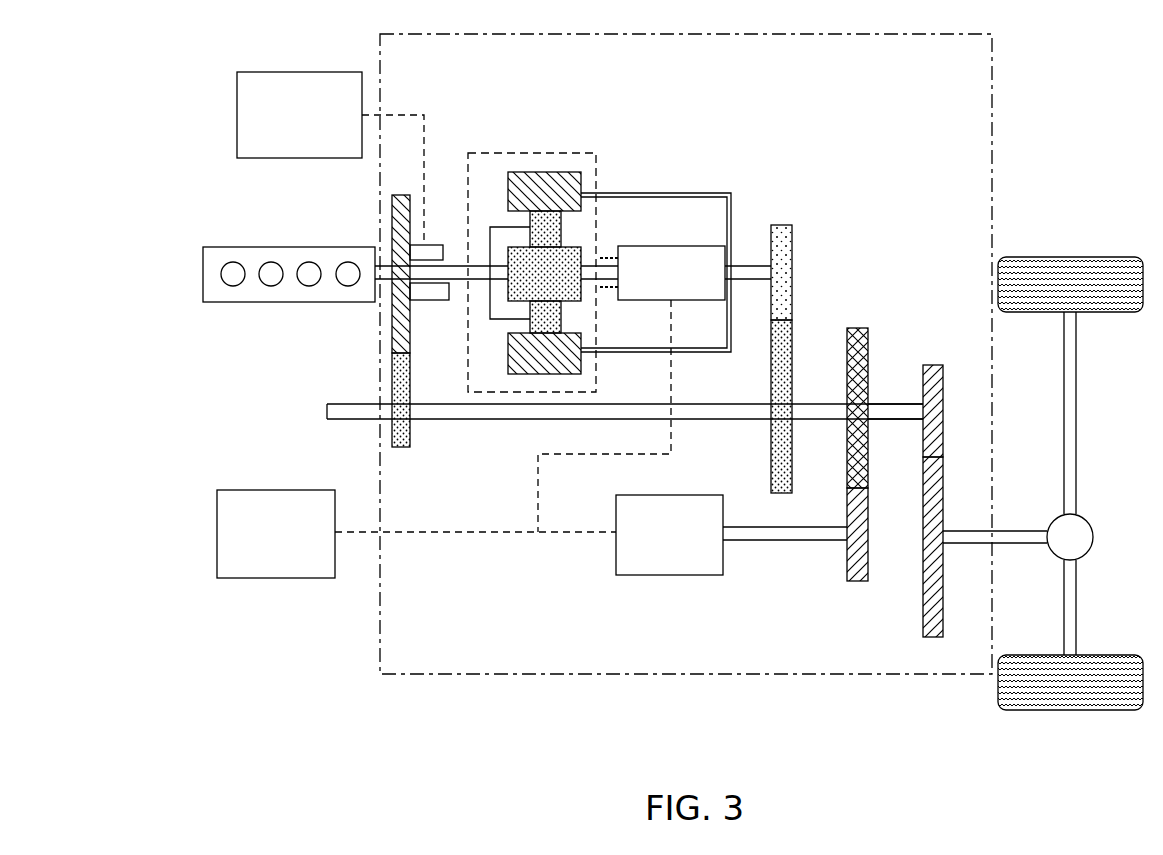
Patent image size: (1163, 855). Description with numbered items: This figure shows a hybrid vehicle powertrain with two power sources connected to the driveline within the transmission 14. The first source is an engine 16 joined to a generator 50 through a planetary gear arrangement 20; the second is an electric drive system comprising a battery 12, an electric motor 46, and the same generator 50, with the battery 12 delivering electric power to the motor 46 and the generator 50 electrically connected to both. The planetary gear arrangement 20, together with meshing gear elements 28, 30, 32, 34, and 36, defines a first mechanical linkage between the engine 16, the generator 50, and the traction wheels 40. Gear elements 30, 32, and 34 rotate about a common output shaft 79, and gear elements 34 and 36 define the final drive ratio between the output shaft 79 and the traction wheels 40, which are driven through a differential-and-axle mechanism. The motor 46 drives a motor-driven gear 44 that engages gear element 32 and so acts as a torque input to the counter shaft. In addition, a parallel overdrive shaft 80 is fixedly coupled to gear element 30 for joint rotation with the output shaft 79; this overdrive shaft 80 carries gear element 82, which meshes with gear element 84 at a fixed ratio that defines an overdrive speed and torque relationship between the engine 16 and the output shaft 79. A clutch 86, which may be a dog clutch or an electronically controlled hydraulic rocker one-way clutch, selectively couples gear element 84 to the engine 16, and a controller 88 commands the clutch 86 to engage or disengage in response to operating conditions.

The battery 12 is at (290, 578).
The transmission 14 is at (782, 675).
The engine 16 is at (290, 302).
The planetary gear arrangement 20 is at (530, 153).
The meshing gear element 28 is at (792, 250).
The meshing gear element 30 is at (792, 455).
The meshing gear element 32 is at (868, 335).
The meshing gear element 34 is at (943, 395).
The meshing gear element 36 is at (943, 598).
The traction wheels 40 is at (1120, 710).
The motor-driven gear 44 is at (868, 525).
The electric motor 46 is at (697, 575).
The generator 50 is at (663, 246).
The output shaft 79 is at (876, 404).
The overdrive shaft 80 is at (478, 420).
The gear element 82 is at (412, 445).
The gear element 84 is at (410, 330).
The clutch 86 is at (435, 245).
The controller 88 is at (300, 72).